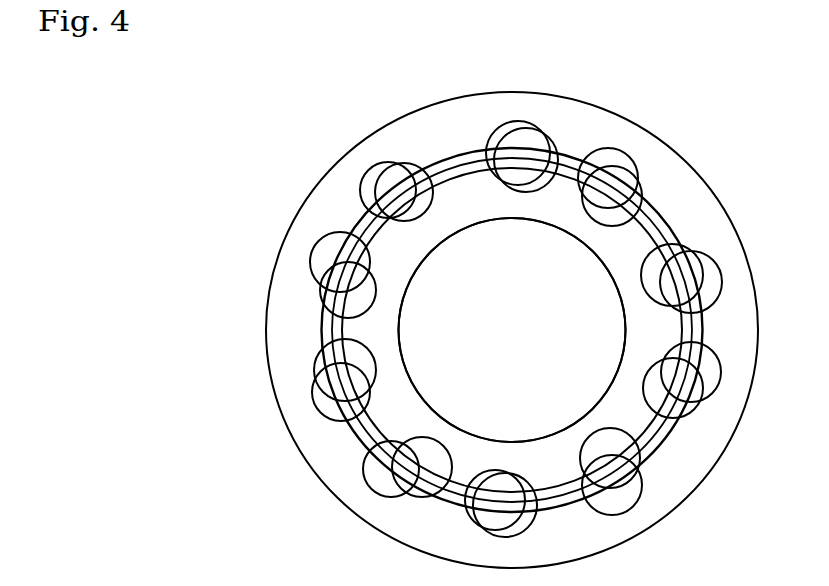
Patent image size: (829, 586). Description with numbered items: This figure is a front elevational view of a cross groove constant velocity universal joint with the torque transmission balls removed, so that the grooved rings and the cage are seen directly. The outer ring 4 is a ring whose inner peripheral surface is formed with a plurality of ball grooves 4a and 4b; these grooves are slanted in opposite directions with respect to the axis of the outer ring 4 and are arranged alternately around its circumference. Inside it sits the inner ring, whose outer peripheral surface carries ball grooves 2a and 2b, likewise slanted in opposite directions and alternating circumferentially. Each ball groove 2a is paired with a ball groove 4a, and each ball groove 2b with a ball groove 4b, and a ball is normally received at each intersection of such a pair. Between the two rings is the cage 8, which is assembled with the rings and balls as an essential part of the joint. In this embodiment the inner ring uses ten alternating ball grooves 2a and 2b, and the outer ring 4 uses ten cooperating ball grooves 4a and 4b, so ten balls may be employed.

The outer ring 4 is at (616, 131).
The ball groove 4a is at (541, 132).
The ball groove 4b is at (592, 158).
The cage 8 is at (630, 182).
The ball groove 2a is at (491, 200).
The ball groove 2b is at (612, 214).